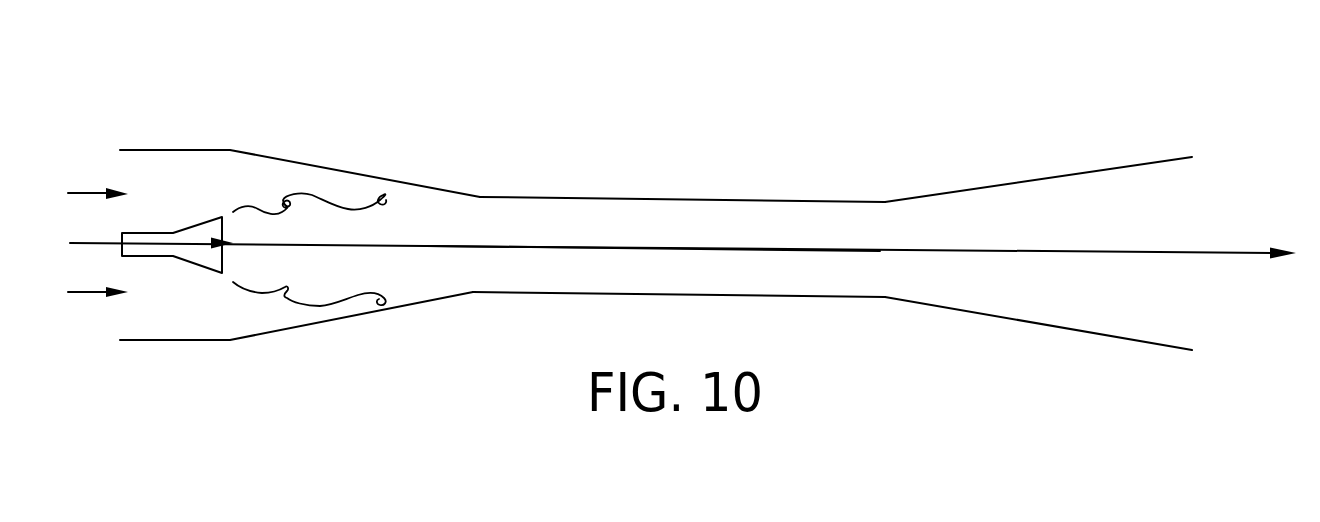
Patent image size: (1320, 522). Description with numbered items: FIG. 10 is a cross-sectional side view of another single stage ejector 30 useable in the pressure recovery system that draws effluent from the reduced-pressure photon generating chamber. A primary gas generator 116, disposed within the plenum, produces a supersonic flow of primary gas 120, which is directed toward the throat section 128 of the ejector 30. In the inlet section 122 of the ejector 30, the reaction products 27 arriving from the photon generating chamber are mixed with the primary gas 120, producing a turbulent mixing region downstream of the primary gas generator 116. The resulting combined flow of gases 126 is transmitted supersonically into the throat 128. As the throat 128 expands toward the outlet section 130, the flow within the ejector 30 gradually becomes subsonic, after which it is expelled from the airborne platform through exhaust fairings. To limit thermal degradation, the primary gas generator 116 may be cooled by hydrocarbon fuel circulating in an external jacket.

The effluent 27 is at (78, 192).
The single stage ejector 30 is at (692, 118).
The primary gas generator 116 is at (195, 252).
The primary gas 120 is at (302, 248).
The inlet section 122 is at (213, 150).
The combined flow of gases 126 is at (587, 247).
The throat section 128 is at (820, 200).
The outlet section 130 is at (1043, 178).